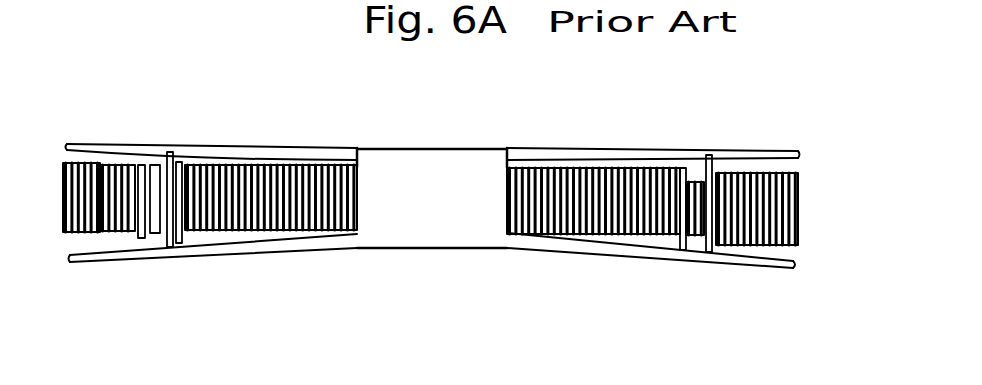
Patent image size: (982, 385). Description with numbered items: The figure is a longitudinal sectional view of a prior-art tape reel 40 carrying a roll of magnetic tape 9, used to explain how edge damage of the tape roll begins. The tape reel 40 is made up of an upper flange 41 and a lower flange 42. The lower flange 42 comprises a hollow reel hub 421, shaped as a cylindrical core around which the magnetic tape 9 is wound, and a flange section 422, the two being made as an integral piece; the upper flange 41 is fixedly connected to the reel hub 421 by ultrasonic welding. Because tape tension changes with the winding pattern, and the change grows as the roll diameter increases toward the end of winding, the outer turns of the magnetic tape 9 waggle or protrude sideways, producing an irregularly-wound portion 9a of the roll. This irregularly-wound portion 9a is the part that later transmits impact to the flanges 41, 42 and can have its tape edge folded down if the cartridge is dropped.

The magnetic tape 9 is at (799, 211).
The irregularly-wound portion 9a is at (171, 152).
The tape reel 40 is at (603, 266).
The upper flange 41 is at (780, 152).
The lower flange 42 is at (288, 262).
The hollow reel hub 421 is at (363, 200).
The flange section 422 is at (243, 252).